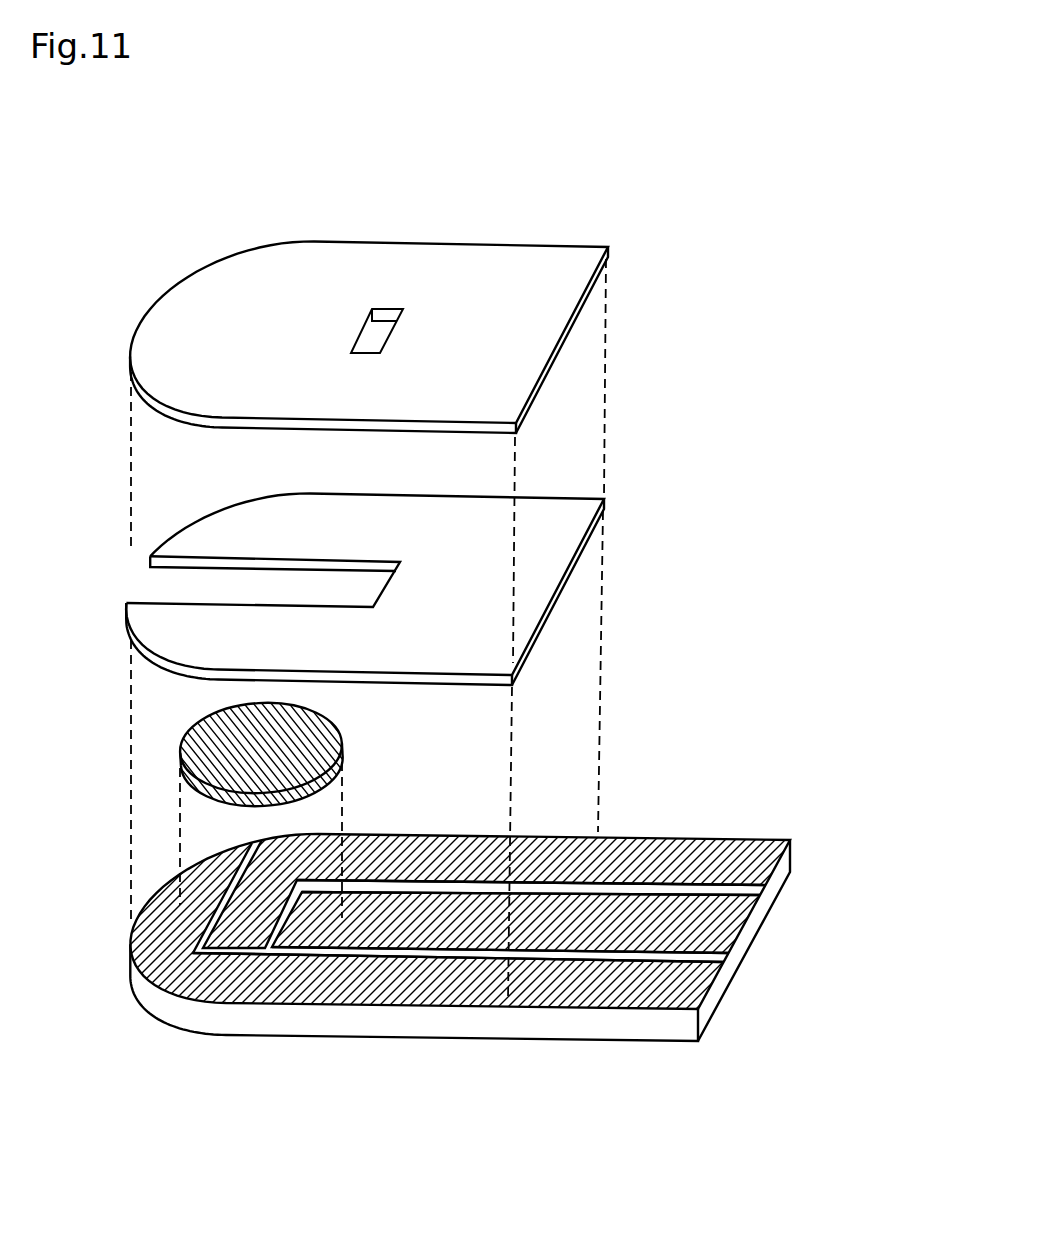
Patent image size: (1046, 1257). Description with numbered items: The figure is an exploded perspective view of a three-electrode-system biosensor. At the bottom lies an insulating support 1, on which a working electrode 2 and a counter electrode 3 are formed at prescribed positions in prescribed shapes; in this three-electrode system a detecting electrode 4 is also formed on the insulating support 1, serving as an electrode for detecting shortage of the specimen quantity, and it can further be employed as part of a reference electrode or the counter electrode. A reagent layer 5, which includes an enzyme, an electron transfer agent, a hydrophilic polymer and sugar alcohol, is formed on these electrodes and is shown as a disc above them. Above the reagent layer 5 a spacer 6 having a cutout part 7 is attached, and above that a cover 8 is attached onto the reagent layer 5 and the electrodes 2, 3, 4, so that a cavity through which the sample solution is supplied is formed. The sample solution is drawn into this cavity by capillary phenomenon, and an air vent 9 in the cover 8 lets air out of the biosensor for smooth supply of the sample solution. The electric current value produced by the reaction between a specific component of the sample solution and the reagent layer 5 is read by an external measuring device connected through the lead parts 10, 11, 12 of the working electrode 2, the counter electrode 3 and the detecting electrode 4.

The insulating support 1 is at (630, 1025).
The working electrode 2 is at (250, 918).
The counter electrode 3 is at (330, 980).
The detecting electrode 4 is at (440, 918).
The reagent layer 5 is at (313, 733).
The spacer 6 is at (562, 523).
The cutout part 7 is at (238, 580).
The cover 8 is at (565, 270).
The air vent 9 is at (385, 323).
The lead part 10 is at (733, 853).
The lead part 11 is at (710, 973).
The lead part 12 is at (725, 913).